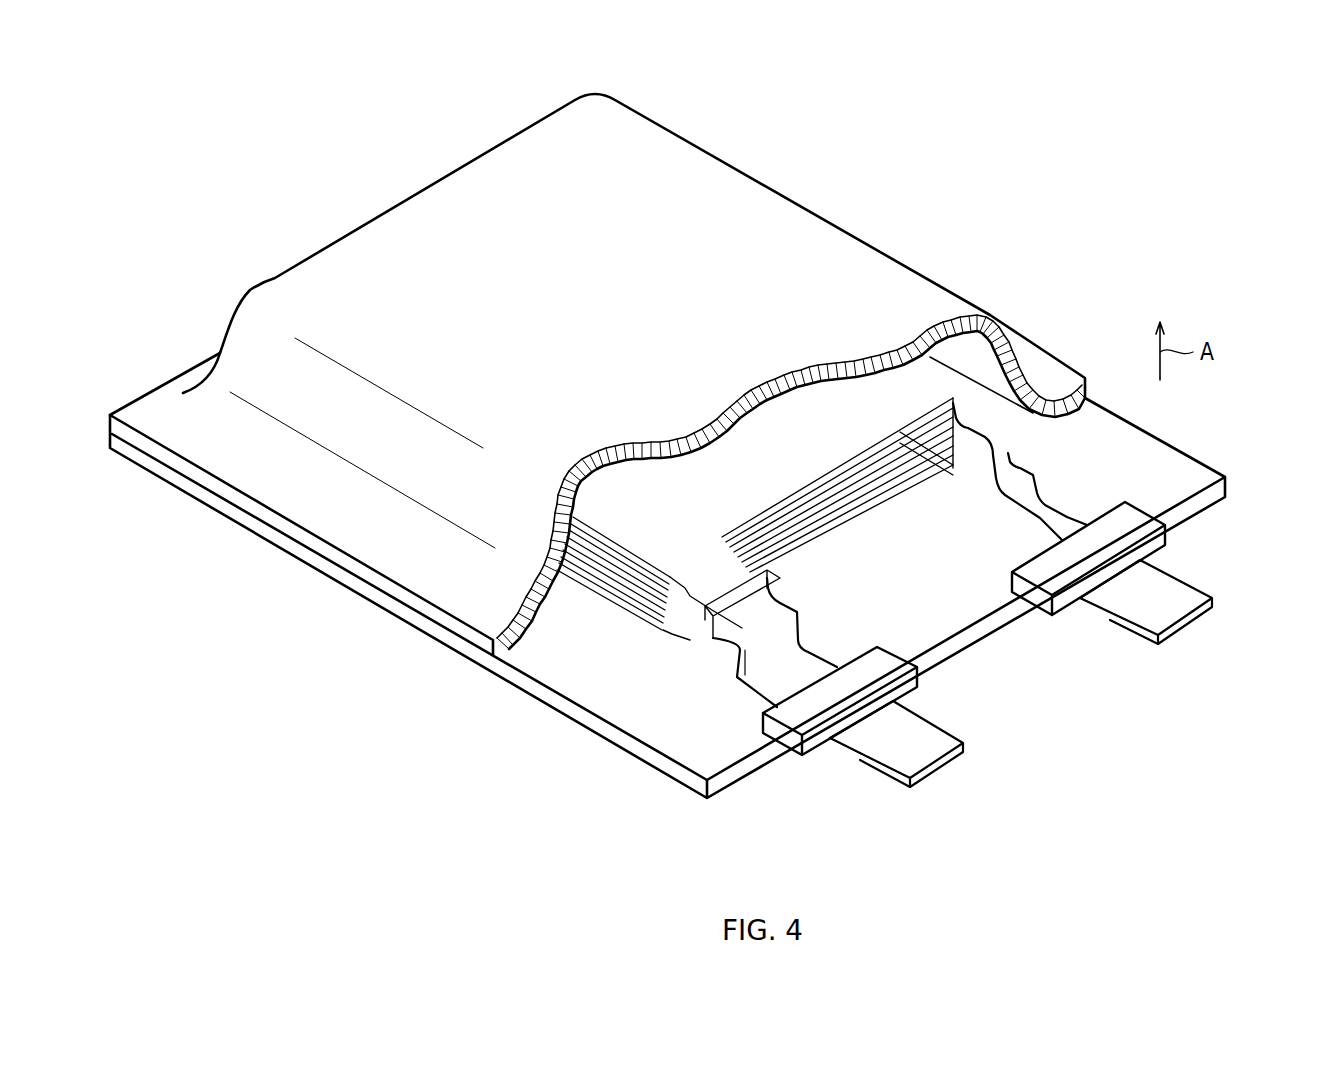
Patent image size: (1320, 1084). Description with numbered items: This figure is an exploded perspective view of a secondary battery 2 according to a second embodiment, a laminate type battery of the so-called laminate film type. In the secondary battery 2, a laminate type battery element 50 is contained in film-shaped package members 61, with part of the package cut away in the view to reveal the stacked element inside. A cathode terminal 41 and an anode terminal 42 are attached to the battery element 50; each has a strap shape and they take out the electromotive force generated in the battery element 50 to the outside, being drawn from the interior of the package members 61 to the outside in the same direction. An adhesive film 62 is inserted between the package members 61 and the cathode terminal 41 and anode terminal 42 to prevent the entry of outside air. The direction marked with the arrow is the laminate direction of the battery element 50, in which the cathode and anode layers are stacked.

The secondary battery 2 is at (1068, 288).
The cathode terminal 41 is at (920, 745).
The anode terminal 42 is at (1193, 578).
The laminate type battery element 50 is at (836, 455).
The package members 61 is at (318, 565).
The adhesive film 62 is at (887, 665).